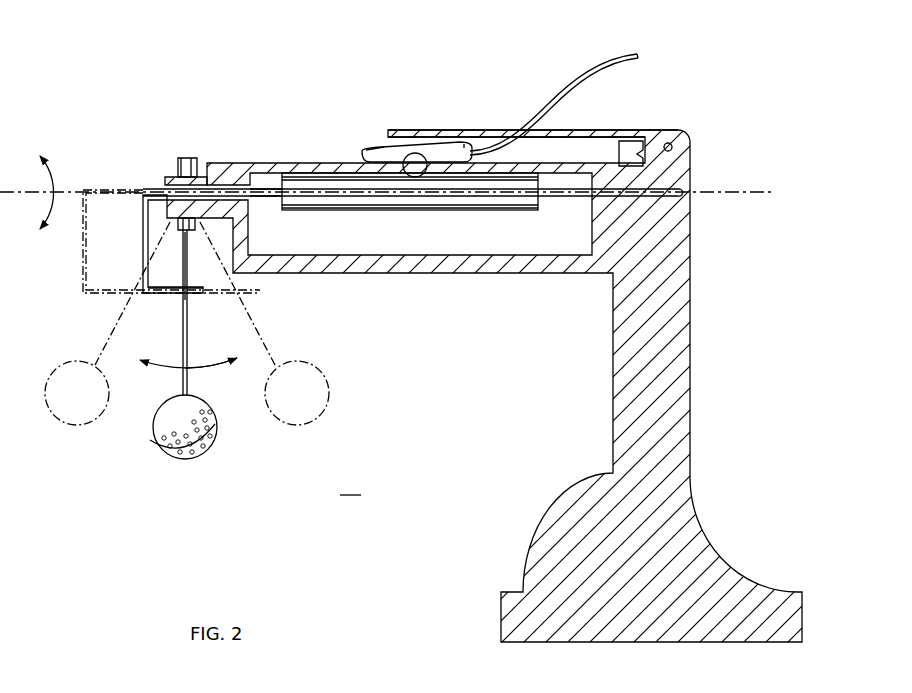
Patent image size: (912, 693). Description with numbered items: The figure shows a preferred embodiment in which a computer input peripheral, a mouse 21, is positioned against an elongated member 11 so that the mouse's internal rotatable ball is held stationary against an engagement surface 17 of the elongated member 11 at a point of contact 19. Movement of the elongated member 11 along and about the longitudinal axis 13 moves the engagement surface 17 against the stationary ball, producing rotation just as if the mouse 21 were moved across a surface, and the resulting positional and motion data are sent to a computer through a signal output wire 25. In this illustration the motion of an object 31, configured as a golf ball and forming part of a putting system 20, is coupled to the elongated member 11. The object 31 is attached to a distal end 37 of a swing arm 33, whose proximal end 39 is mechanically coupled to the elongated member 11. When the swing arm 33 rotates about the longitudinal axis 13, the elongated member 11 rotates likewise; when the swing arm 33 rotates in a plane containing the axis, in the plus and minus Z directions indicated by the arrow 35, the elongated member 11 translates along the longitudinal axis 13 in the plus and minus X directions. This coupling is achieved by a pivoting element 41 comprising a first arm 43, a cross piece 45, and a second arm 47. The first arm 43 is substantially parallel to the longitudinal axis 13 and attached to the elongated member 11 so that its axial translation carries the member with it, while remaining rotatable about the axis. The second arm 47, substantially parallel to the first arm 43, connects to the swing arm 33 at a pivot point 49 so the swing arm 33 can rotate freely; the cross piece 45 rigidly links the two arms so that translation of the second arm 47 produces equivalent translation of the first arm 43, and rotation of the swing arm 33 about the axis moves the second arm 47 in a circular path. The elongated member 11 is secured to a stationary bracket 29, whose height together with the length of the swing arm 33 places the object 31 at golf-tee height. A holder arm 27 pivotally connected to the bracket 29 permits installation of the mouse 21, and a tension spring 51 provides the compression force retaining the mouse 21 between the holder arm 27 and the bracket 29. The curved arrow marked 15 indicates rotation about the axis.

The elongated member 11 is at (485, 213).
The longitudinal axis 13 is at (728, 194).
The rotation direction 15 is at (52, 167).
The engagement surface 17 is at (320, 212).
The point of contact 19 is at (418, 181).
The putting system 20 is at (361, 495).
The mouse 21 is at (377, 146).
The signal output wire 25 is at (548, 92).
The holder arm 27 is at (623, 126).
The bracket 29 is at (693, 357).
The object 31 is at (197, 458).
The swing arm 33 is at (190, 335).
The arrow 35 is at (167, 375).
The distal end 37 is at (193, 392).
The proximal end 39 is at (181, 233).
The pivoting element 41 is at (143, 193).
The first arm 43 is at (265, 198).
The cross piece 45 is at (143, 248).
The second arm 47 is at (196, 287).
The pivot point 49 is at (197, 305).
The tension spring 51 is at (616, 151).